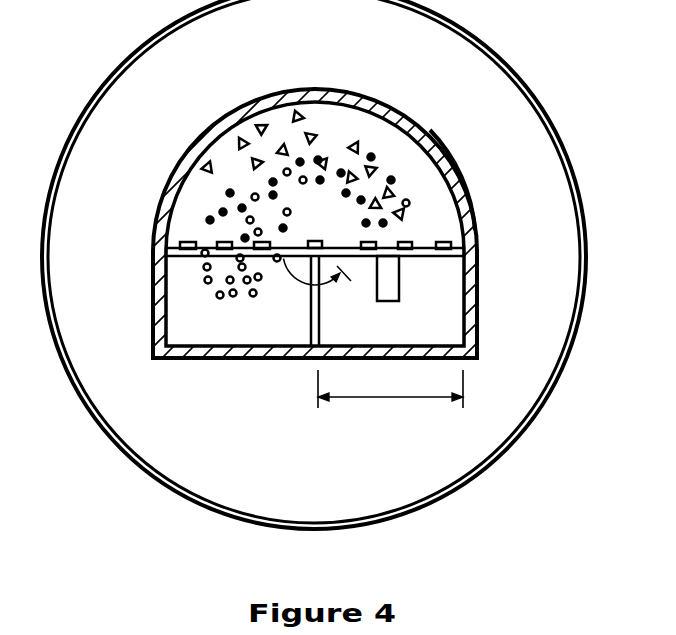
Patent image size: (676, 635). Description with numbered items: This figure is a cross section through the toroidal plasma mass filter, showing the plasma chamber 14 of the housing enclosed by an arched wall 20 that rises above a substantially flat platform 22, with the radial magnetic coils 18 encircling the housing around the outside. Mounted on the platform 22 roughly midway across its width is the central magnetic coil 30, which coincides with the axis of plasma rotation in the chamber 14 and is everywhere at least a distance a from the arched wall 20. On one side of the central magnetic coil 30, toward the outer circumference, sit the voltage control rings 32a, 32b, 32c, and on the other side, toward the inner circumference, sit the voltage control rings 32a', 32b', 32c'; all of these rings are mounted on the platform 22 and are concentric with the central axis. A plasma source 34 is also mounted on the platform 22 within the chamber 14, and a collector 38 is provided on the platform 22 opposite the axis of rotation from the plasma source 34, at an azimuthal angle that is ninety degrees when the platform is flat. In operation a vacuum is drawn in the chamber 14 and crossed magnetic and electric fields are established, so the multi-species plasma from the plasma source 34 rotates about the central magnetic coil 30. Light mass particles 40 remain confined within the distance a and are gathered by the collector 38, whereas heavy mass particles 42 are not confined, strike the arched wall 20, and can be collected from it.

The plasma chamber 14 is at (348, 104).
The radial magnetic coils 18 is at (145, 37).
The arched wall 20 is at (453, 172).
The platform 22 is at (472, 262).
The central magnetic coil 30 is at (317, 240).
The voltage control ring 32a is at (454, 209).
The voltage control ring 32b is at (468, 228).
The voltage control ring 32c is at (493, 258).
The voltage control ring 32a' is at (148, 209).
The voltage control ring 32b' is at (171, 230).
The voltage control ring 32c' is at (170, 265).
The plasma source 34 is at (401, 293).
The collector 38 is at (187, 300).
The light mass particles 40 is at (222, 210).
The heavy mass particles 42 is at (246, 134).